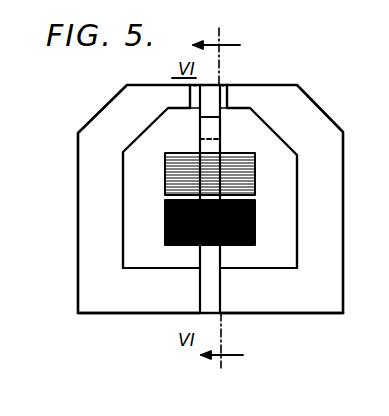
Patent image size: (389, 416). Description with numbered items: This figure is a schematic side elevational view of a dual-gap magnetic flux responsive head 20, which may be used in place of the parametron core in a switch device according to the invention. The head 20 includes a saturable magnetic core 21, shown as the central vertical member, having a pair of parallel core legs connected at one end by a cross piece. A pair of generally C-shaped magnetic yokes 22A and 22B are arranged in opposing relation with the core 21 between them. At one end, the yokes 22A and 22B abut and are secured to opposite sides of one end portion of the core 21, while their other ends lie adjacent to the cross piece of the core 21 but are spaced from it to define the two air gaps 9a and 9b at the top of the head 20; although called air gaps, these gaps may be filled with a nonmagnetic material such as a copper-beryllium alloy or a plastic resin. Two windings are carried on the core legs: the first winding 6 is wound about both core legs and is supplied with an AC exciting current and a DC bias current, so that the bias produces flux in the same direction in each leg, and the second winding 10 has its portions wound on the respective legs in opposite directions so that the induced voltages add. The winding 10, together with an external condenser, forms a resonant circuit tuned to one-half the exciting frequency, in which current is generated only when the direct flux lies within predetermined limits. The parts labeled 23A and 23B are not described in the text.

The dual-gap magnetic flux responsive head 20 is at (344, 178).
The saturable magnetic core 21 is at (222, 128).
The second winding 10 is at (166, 184).
The first winding 6 is at (166, 238).
The left bearing 23A is at (193, 97).
The right bearing 23B is at (228, 102).
The air gap 9a is at (197, 86).
The air gap 9b is at (222, 84).
The magnetic yoke 22A is at (152, 300).
The magnetic yoke 22B is at (278, 297).